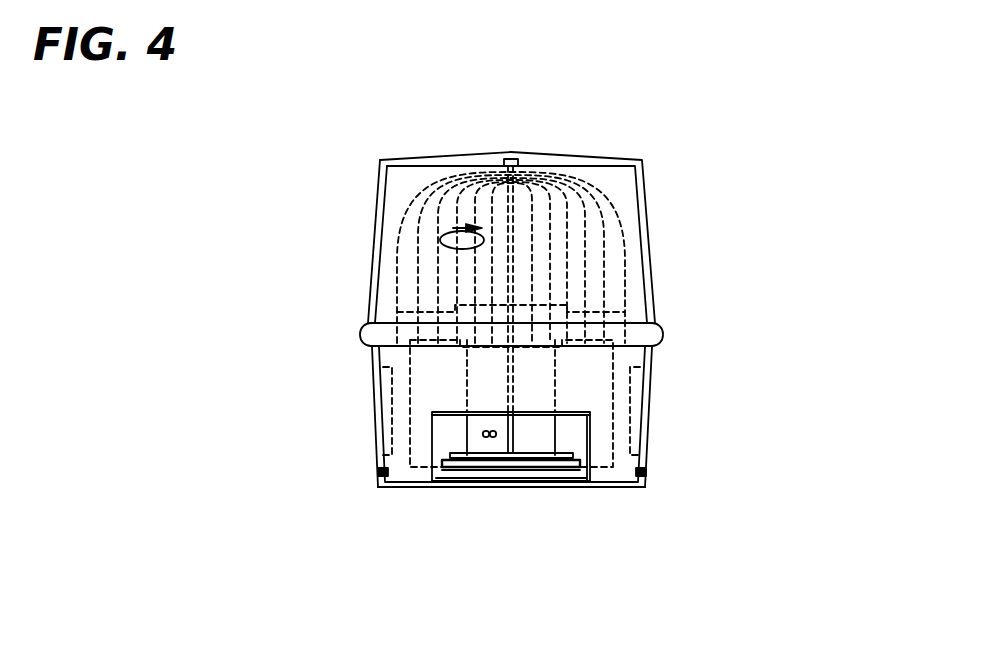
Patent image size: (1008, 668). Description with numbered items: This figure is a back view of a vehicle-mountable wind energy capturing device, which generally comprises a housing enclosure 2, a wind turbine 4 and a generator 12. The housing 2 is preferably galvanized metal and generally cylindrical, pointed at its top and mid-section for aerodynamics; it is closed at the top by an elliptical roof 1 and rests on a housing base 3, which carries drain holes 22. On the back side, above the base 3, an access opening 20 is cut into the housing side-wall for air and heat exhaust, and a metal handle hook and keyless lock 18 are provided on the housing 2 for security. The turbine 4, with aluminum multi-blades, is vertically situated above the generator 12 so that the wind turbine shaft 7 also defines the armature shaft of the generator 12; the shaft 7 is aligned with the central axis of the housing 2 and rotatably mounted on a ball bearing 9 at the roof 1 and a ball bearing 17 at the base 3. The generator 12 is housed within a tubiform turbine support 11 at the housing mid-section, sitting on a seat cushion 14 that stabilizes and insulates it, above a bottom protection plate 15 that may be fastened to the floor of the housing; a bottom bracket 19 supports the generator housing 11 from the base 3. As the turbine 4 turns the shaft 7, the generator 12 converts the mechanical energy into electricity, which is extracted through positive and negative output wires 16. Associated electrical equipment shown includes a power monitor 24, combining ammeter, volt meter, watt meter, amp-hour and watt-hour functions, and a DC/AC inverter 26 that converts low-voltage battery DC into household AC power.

The roof 1 is at (465, 159).
The housing enclosure 2 is at (376, 262).
The housing base 3 is at (617, 485).
The wind turbine 4 is at (400, 284).
The wind turbine shaft 7 is at (512, 227).
The ball bearing 9 is at (512, 158).
The tubiform turbine support 11 is at (410, 372).
The generator 12 is at (484, 383).
The seat cushion 14 is at (470, 467).
The bottom protection plate 15 is at (575, 455).
The output wires 16 is at (483, 432).
The ball bearing 17 is at (505, 458).
The handle hook and keyless lock 18 is at (360, 335).
The bottom bracket 19 is at (440, 476).
The access opening 20 is at (523, 434).
The drain holes 22 is at (380, 472).
The power monitor 24 is at (445, 442).
The DC/AC inverter 26 is at (632, 413).